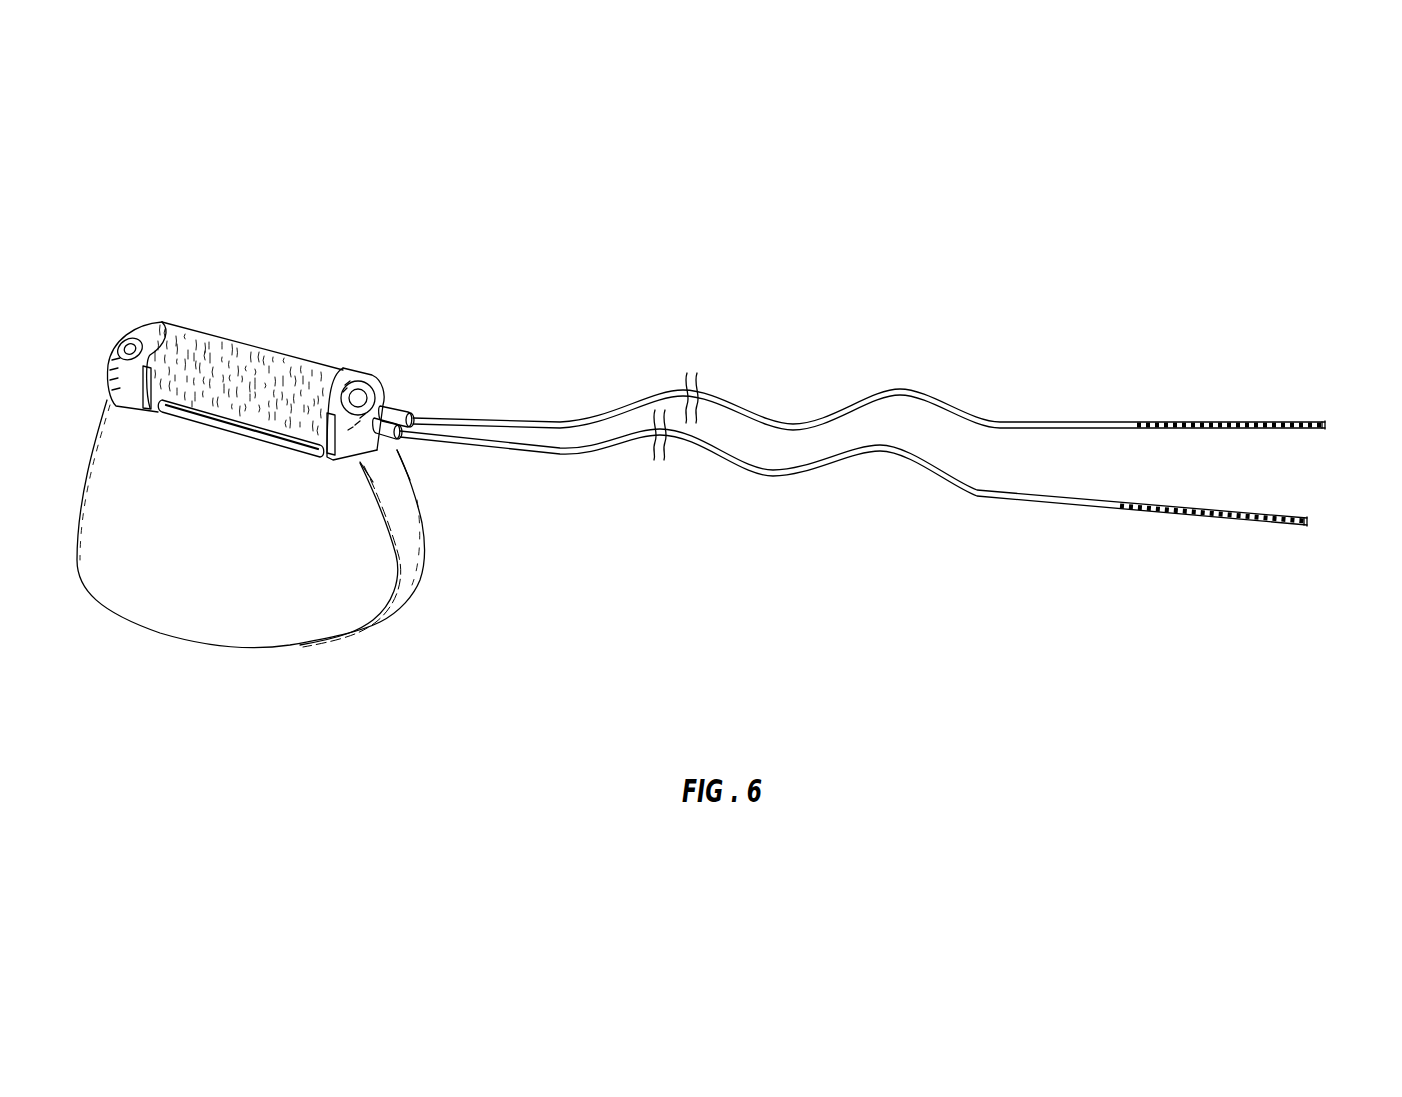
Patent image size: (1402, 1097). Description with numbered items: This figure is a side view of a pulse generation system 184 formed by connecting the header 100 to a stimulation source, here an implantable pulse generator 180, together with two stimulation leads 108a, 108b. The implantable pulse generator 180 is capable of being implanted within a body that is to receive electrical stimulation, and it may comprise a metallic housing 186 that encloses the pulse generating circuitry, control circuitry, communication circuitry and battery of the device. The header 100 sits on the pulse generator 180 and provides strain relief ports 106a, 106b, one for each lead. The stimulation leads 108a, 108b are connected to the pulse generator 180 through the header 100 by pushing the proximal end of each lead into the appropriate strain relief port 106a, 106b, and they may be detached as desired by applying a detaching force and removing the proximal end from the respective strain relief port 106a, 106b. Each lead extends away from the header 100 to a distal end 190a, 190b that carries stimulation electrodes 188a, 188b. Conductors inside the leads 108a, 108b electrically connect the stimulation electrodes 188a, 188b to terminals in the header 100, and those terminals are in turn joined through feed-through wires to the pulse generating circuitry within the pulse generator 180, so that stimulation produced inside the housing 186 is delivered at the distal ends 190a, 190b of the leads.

The pulse generation system 184 is at (752, 228).
The header 100 is at (277, 345).
The strain relief port 106a is at (403, 412).
The strain relief port 106b is at (392, 438).
The stimulation lead 108a is at (733, 400).
The stimulation lead 108b is at (773, 476).
The implantable pulse generator 180 is at (174, 631).
The metallic housing 186 is at (335, 617).
The stimulation electrode 188a is at (1257, 420).
The stimulation electrode 188b is at (1242, 522).
The distal end 190a is at (1325, 428).
The distal end 190b is at (1307, 525).